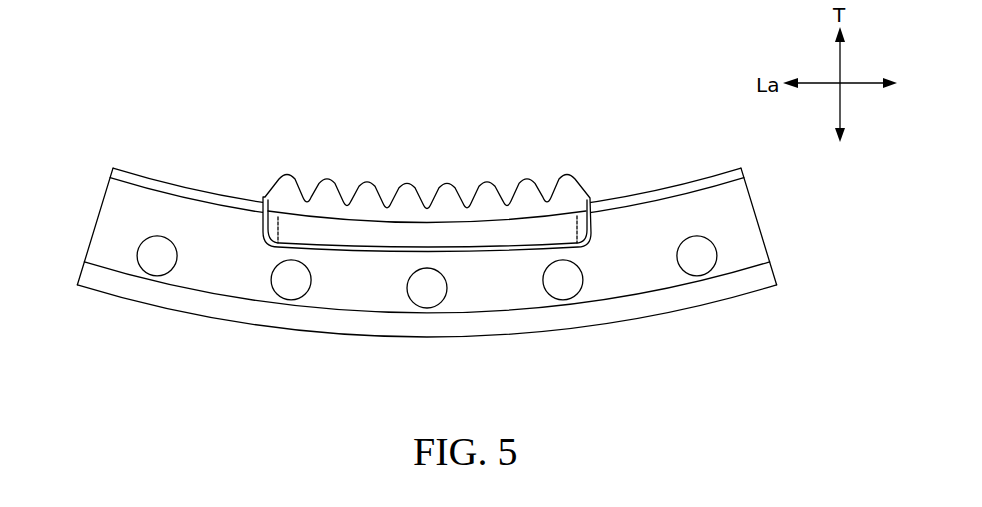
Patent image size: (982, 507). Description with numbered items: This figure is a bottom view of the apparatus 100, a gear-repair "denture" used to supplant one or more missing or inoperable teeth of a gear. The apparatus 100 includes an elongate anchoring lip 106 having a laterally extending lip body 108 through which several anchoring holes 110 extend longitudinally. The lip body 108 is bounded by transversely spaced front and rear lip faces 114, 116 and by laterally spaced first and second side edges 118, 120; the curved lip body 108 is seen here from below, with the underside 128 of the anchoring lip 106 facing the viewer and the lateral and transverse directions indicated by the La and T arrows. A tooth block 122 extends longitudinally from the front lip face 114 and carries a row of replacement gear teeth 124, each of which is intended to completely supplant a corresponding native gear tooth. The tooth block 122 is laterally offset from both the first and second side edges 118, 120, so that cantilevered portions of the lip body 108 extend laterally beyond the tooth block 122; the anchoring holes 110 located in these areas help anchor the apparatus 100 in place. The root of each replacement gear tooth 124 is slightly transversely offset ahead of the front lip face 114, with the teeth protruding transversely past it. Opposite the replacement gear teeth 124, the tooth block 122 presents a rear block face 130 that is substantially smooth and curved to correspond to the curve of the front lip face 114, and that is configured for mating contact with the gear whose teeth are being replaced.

The apparatus 100 is at (428, 243).
The anchoring lip 106 is at (428, 251).
The lip body 108 is at (212, 268).
The anchoring hole 110 is at (292, 278).
The front lip face 114 is at (703, 177).
The rear lip face 116 is at (618, 322).
The first side edge 118 is at (94, 225).
The second side edge 120 is at (760, 228).
The tooth block 122 is at (462, 242).
The replacement gear tooth 124 is at (485, 178).
The underside 128 is at (223, 235).
The rear block face 130 is at (500, 253).